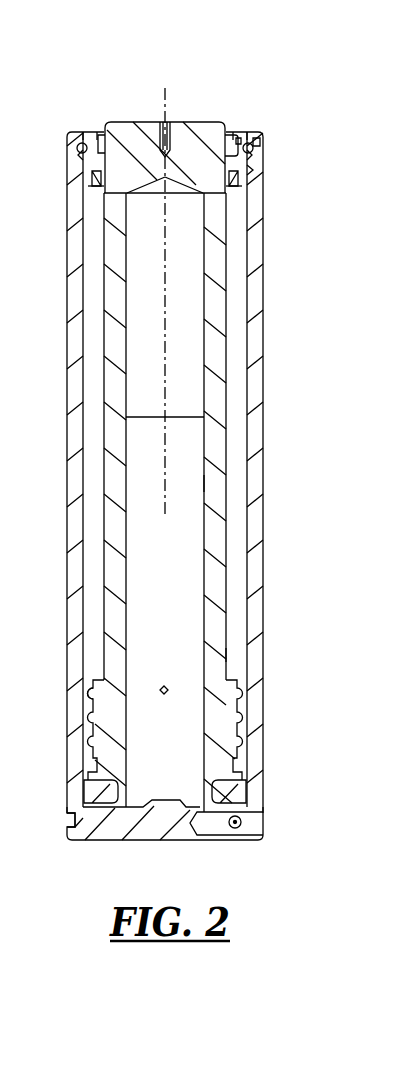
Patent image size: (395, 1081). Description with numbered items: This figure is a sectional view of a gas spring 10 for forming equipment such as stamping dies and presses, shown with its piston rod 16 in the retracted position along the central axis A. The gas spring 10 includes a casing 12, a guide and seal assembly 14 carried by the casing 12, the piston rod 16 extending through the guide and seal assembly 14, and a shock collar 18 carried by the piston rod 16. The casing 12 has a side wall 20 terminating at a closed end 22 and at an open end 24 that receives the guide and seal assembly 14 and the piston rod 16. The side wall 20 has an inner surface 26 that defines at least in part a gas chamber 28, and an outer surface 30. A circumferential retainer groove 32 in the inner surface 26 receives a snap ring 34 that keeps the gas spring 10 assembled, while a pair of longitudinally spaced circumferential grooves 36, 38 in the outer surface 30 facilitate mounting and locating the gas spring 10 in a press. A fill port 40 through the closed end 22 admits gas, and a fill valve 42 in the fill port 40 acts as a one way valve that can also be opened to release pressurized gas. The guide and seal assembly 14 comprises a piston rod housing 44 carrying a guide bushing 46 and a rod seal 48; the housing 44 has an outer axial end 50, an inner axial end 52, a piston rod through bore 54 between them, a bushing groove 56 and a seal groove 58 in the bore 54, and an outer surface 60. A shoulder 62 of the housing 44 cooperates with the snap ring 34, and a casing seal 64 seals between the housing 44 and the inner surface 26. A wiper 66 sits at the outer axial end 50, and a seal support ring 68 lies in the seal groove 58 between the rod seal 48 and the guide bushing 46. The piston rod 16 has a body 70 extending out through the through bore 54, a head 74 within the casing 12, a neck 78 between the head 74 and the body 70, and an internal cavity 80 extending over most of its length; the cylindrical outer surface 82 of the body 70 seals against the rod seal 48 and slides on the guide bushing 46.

The gas spring 10 is at (249, 70).
The casing 12 is at (279, 557).
The guide and seal assembly 14 is at (90, 122).
The piston rod 16 is at (238, 353).
The shock collar 18 is at (83, 722).
The side wall 20 is at (252, 447).
The closed end 22 is at (172, 828).
The open end 24 is at (257, 143).
The inner surface 26 is at (243, 655).
The gas chamber 28 is at (107, 797).
The outer surface 30 is at (264, 707).
The retainer groove 32 is at (80, 155).
The snap ring 34 is at (252, 147).
The circumferential groove 36 is at (262, 167).
The circumferential groove 38 is at (72, 819).
The fill port 40 is at (208, 822).
The fill valve 42 is at (240, 827).
The piston rod housing 44 is at (84, 184).
The guide bushing 46 is at (100, 143).
The rod seal 48 is at (250, 180).
The outer axial end 50 is at (238, 133).
The inner axial end 52 is at (234, 176).
The piston rod through bore 54 is at (218, 154).
The bushing groove 56 is at (230, 132).
The seal groove 58 is at (108, 177).
The outer surface 60 is at (254, 172).
The shoulder 62 is at (79, 144).
The casing seal 64 is at (86, 172).
The wiper 66 is at (99, 132).
The seal support ring 68 is at (228, 172).
The body 70 is at (214, 414).
The head 74 is at (240, 799).
The neck 78 is at (100, 696).
The internal cavity 80 is at (176, 638).
The cylindrical outer surface 82 is at (224, 483).
The axis A is at (164, 95).